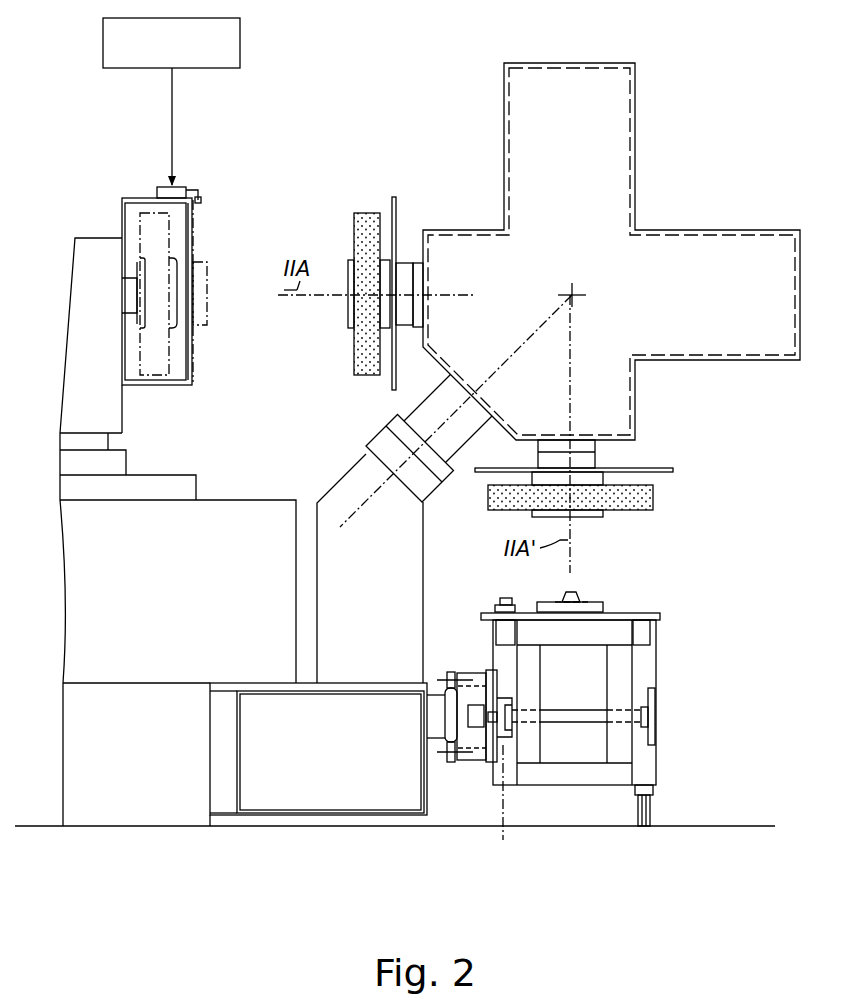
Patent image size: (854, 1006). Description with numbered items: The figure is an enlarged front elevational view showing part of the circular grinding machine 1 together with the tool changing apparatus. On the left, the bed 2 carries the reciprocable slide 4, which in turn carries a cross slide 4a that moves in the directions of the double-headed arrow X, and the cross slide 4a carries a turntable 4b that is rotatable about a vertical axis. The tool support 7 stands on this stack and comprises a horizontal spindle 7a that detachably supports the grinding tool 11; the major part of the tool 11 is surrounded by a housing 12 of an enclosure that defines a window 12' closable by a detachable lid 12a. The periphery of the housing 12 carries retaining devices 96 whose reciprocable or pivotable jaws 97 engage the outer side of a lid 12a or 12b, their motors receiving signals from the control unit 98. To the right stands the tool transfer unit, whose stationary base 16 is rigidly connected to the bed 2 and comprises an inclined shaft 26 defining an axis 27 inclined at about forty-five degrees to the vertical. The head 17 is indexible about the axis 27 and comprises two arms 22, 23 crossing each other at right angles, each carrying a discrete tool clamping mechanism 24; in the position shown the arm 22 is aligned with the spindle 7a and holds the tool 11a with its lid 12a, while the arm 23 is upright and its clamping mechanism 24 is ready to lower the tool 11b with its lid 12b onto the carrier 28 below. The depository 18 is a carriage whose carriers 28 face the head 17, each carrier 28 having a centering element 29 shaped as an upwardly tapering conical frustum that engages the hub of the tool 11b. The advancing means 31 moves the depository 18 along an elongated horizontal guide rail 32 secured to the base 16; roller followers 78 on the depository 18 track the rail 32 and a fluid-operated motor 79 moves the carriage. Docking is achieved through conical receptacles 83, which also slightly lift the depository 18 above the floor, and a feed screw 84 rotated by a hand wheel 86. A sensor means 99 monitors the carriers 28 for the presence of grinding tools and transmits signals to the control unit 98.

The circular grinding machine 1 is at (231, 207).
The bed 2 is at (83, 607).
The slide 4 is at (90, 490).
The cross slide 4a is at (75, 463).
The turntable 4b is at (73, 443).
The tool support 7 is at (82, 335).
The spindle 7a is at (130, 293).
The grinding tool 11 is at (158, 362).
The grinding tool on arm 22 11a is at (372, 356).
The grinding tool on arm 23 11b is at (640, 498).
The housing 12 is at (134, 276).
The window 12' is at (213, 295).
The lid 12a is at (393, 207).
The lid 12b is at (673, 472).
The base 16 is at (285, 790).
The head 17 is at (670, 148).
The depository 18 is at (640, 666).
The arm 22 is at (466, 250).
The arm 23 is at (612, 398).
The tool clamping mechanism 24 is at (410, 250).
The inclined shaft 26 is at (420, 418).
The axis 27 is at (355, 502).
The carrier 28 is at (592, 608).
The centering element 29 is at (575, 598).
The advancing means 31 is at (478, 775).
The guide rail 32 is at (452, 742).
The roller followers 78 is at (443, 672).
The fluid-operated motor 79 is at (470, 744).
The conical receptacles 83 is at (506, 744).
The feed screw 84 is at (592, 715).
The hand wheel 86 is at (655, 717).
The retaining devices 96 is at (165, 192).
The jaws 97 is at (200, 193).
The control unit 98 is at (223, 47).
The sensor means 99 is at (497, 603).